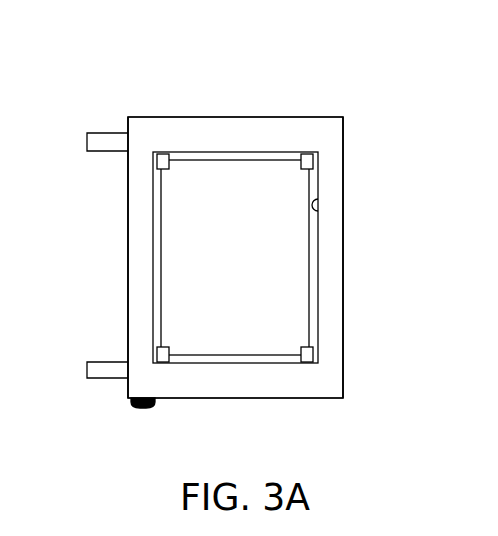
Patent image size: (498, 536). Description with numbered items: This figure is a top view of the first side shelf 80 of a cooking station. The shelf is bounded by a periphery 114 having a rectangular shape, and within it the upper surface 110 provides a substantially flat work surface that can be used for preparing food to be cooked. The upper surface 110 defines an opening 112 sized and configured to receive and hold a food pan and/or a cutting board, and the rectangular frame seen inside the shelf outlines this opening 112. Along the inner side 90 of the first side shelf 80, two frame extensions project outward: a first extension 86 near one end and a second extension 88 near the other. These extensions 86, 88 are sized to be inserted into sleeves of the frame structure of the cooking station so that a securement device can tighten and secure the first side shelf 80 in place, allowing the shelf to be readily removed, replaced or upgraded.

The first side shelf 80 is at (279, 97).
The first extension 86 is at (98, 385).
The second extension 88 is at (98, 128).
The inner side 90 is at (128, 215).
The upper surface 110 is at (320, 130).
The opening 112 is at (315, 209).
The periphery 114 is at (343, 258).